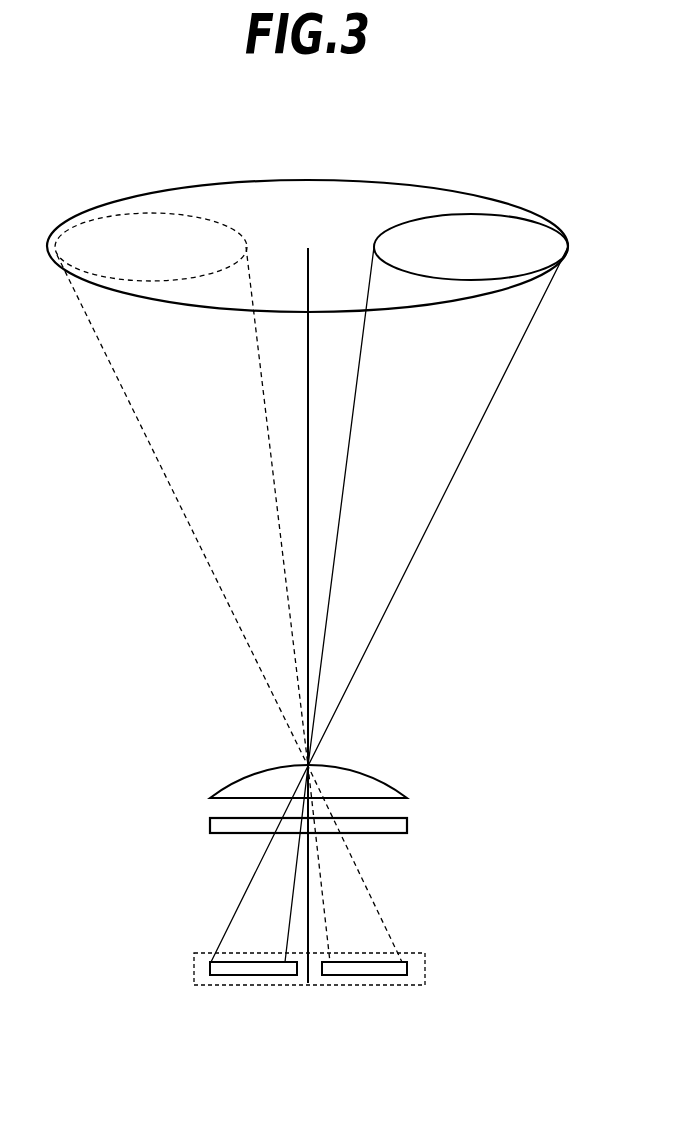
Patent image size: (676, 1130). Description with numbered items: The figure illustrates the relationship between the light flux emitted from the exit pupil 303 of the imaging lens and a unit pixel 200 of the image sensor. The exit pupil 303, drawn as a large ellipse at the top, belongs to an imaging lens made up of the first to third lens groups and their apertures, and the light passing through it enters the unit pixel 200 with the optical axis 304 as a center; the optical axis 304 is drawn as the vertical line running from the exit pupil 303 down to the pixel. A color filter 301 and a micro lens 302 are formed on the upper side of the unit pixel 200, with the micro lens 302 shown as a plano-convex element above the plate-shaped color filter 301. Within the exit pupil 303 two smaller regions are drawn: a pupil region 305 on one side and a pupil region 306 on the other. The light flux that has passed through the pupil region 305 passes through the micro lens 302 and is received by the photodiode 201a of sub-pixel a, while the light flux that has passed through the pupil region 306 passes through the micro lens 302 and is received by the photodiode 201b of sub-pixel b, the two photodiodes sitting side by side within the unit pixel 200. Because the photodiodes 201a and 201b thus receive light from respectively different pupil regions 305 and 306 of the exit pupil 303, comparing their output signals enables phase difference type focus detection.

The unit pixel 200 is at (297, 985).
The photodiode of sub-pixel a 201a is at (233, 975).
The photodiode of sub-pixel b 201b is at (378, 975).
The color filter 301 is at (209, 829).
The micro lens 302 is at (238, 778).
The exit pupil 303 is at (215, 185).
The optical axis 304 is at (323, 265).
The pupil region 305 is at (497, 228).
The pupil region 306 is at (107, 233).